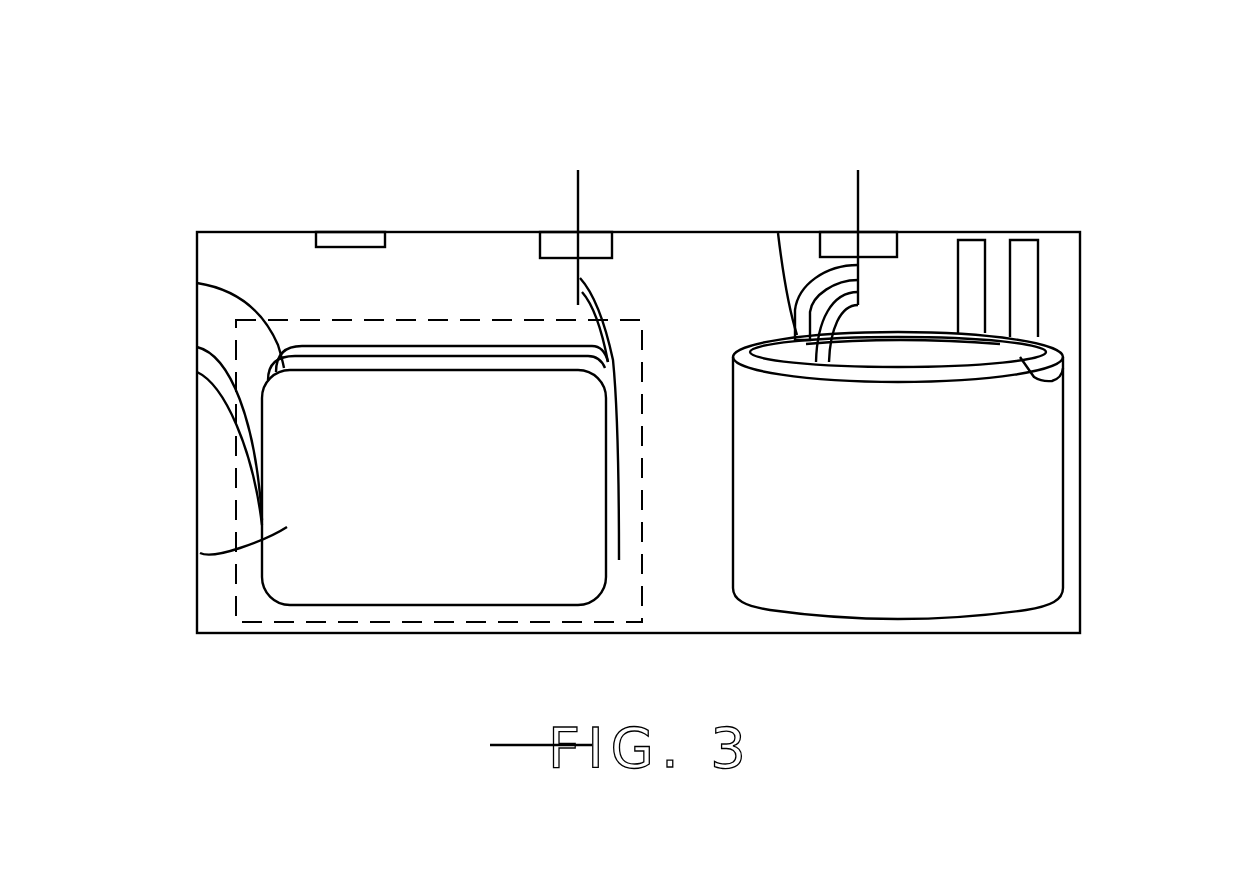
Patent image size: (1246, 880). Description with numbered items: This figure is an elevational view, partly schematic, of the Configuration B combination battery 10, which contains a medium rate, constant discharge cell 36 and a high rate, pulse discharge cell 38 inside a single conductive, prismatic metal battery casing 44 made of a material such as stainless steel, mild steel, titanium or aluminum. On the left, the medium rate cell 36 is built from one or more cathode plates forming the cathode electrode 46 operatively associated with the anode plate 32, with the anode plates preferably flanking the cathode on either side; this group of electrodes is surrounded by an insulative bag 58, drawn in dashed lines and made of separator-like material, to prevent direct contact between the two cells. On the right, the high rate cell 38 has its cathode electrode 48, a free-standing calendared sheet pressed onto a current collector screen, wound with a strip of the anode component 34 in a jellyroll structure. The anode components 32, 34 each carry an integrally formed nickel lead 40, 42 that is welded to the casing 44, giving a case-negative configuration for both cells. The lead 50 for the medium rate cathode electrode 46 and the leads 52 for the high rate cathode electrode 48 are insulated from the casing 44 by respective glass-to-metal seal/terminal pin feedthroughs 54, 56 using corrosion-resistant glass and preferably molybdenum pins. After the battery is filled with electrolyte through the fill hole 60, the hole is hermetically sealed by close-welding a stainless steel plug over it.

The combination battery 10 is at (1102, 92).
The anode component 32 is at (197, 283).
The anode component 34 is at (1018, 474).
The medium rate cell 36 is at (428, 302).
The high rate cell 38 is at (1056, 312).
The lead 40 is at (224, 372).
The lead 42 is at (1018, 252).
The battery casing 44 is at (1082, 422).
The cathode electrode 46 is at (345, 368).
The cathode electrode 48 is at (1060, 377).
The lead 50 is at (604, 302).
The leads 52 is at (812, 322).
The glass-to-metal seal/terminal pin feedthrough 54 is at (596, 224).
The glass-to-metal seal/terminal pin feedthrough 56 is at (878, 224).
The insulative bag 58 is at (352, 622).
The fill hole 60 is at (350, 232).